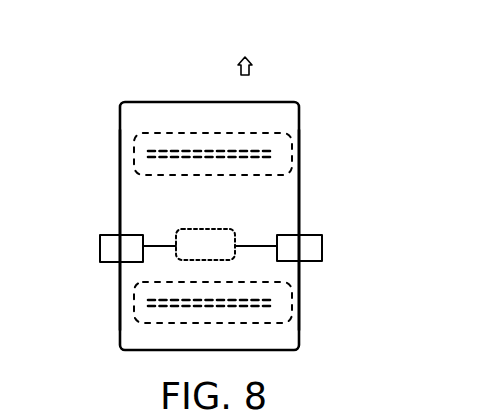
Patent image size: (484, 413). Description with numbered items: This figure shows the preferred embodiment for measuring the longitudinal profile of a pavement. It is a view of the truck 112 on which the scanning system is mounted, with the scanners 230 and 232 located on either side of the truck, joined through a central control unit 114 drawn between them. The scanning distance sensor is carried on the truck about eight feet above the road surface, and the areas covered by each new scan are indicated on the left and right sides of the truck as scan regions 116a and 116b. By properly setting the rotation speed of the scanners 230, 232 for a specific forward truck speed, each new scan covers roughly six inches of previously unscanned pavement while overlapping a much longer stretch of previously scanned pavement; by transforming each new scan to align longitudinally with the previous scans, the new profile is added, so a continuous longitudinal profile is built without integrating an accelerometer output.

The truck 112 is at (299, 104).
The central control unit (CCU) 114 is at (198, 228).
The left side edge of cushion 116a is at (118, 179).
The right side edge of cushion 116b is at (299, 173).
The scanner 230 is at (100, 234).
The scanner 232 is at (322, 234).